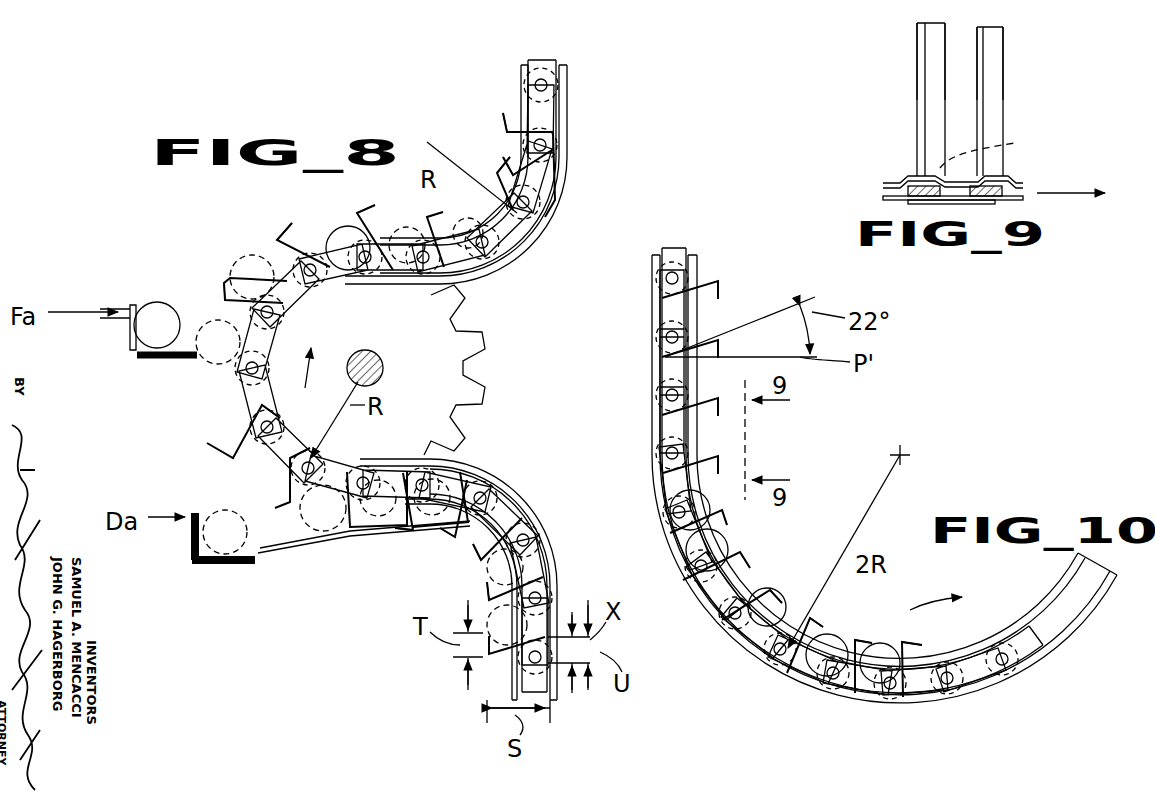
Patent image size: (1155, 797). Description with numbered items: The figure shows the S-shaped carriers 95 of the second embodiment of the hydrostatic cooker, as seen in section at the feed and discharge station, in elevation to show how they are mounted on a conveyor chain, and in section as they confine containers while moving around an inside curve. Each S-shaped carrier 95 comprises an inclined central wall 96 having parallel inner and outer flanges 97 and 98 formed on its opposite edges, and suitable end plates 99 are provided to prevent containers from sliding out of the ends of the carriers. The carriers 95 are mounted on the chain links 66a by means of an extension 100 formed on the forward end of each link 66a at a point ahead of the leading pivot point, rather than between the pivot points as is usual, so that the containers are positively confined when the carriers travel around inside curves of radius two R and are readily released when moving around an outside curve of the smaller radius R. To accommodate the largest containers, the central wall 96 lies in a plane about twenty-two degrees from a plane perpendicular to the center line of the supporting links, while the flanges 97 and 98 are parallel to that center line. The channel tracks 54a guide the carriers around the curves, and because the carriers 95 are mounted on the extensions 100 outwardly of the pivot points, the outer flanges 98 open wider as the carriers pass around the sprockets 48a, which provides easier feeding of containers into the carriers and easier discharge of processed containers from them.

In FIG. 8, the sprocket 48a is at (442, 349).
In FIG. 8, the channel track 54a is at (565, 78).
In FIG. 10, the channel track 54a is at (1087, 612).
In FIG. 8, the chain link 66a is at (540, 172).
In FIG. 9, the chain link 66a is at (900, 182).
In FIG. 10, the chain link 66a is at (675, 250).
In FIG. 8, the S-shaped carrier bar 95 is at (544, 126).
In FIG. 9, the S-shaped carrier bar 95 is at (975, 88).
In FIG. 10, the S-shaped carrier bar 95 is at (650, 338).
In FIG. 8, the inclined central wall 96 is at (565, 133).
In FIG. 10, the inclined central wall 96 is at (930, 698).
In FIG. 8, the inner flange 97 is at (560, 152).
In FIG. 9, the inner flange 97 is at (918, 100).
In FIG. 10, the inner flange 97 is at (692, 580).
In FIG. 8, the outer flange 98 is at (505, 120).
In FIG. 9, the outer flange 98 is at (990, 60).
In FIG. 10, the outer flange 98 is at (773, 590).
In FIG. 8, the end plate 99 is at (262, 282).
In FIG. 9, the end plate 99 is at (995, 152).
In FIG. 10, the end plate 99 is at (785, 586).
In FIG. 8, the extension 100 is at (548, 74).
In FIG. 9, the extension 100 is at (1012, 180).
In FIG. 10, the extension 100 is at (666, 306).